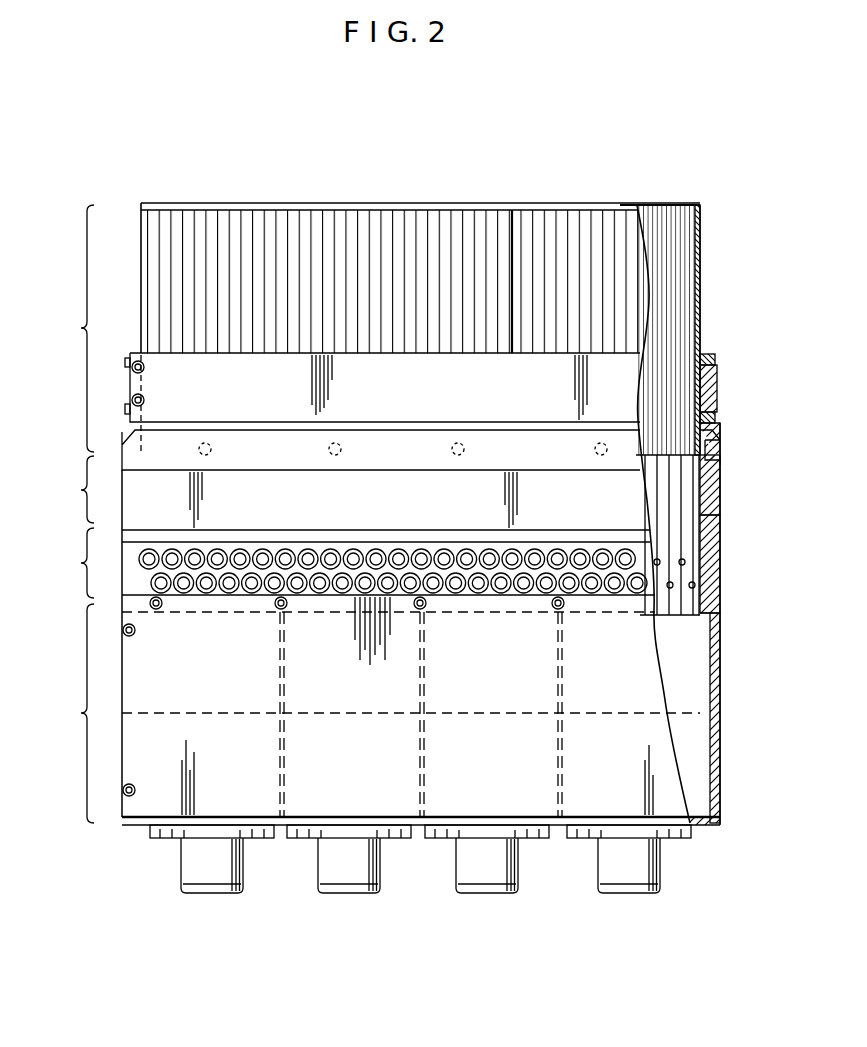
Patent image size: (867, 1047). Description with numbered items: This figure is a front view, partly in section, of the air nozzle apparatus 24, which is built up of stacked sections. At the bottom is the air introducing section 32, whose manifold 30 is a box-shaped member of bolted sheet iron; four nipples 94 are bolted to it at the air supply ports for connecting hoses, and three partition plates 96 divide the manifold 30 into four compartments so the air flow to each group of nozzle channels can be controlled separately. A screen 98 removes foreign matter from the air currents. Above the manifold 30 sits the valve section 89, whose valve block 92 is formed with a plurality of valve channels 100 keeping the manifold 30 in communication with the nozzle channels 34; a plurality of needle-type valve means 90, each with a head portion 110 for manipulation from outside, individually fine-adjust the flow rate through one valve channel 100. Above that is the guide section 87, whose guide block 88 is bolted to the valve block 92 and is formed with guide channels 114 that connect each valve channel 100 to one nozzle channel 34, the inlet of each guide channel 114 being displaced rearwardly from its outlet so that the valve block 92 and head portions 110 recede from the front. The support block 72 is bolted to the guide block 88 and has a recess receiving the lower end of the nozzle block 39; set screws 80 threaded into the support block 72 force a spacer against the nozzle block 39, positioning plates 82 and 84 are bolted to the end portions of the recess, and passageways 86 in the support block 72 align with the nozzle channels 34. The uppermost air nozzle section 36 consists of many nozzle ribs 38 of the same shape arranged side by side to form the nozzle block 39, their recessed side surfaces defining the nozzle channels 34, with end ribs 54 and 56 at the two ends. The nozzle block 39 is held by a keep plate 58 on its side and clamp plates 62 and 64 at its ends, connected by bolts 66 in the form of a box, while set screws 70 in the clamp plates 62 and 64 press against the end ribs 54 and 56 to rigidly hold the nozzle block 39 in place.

The air nozzle apparatus 24 is at (530, 202).
The manifold 30 is at (718, 741).
The air introducing section 32 is at (65, 713).
The nozzle channels 34 is at (702, 208).
The air nozzle section 36 is at (65, 328).
The nozzle ribs 38 is at (327, 222).
The nozzle block 39 is at (512, 333).
The end rib 54 is at (702, 262).
The end rib 56 is at (141, 230).
The keep plate 58 is at (425, 404).
The clamp plate 62 is at (716, 386).
The clamp plate 64 is at (141, 358).
The bolts 66 is at (146, 369).
The set screws 70 is at (125, 409).
The support block 72 is at (700, 462).
The set screws 80 is at (212, 449).
The positioning plate 82 is at (716, 442).
The positioning plate 84 is at (122, 449).
The passageways 86 is at (708, 482).
The guide section 87 is at (67, 489).
The guide block 88 is at (688, 518).
The valve section 89 is at (66, 563).
The valve means 90 is at (240, 600).
The valve block 92 is at (710, 568).
The nipples 94 is at (243, 884).
The partition plates 96 is at (286, 770).
The screen 98 is at (685, 715).
The valve channels 100 is at (706, 614).
The head portion 110 is at (501, 594).
The guide channels 114 is at (702, 535).